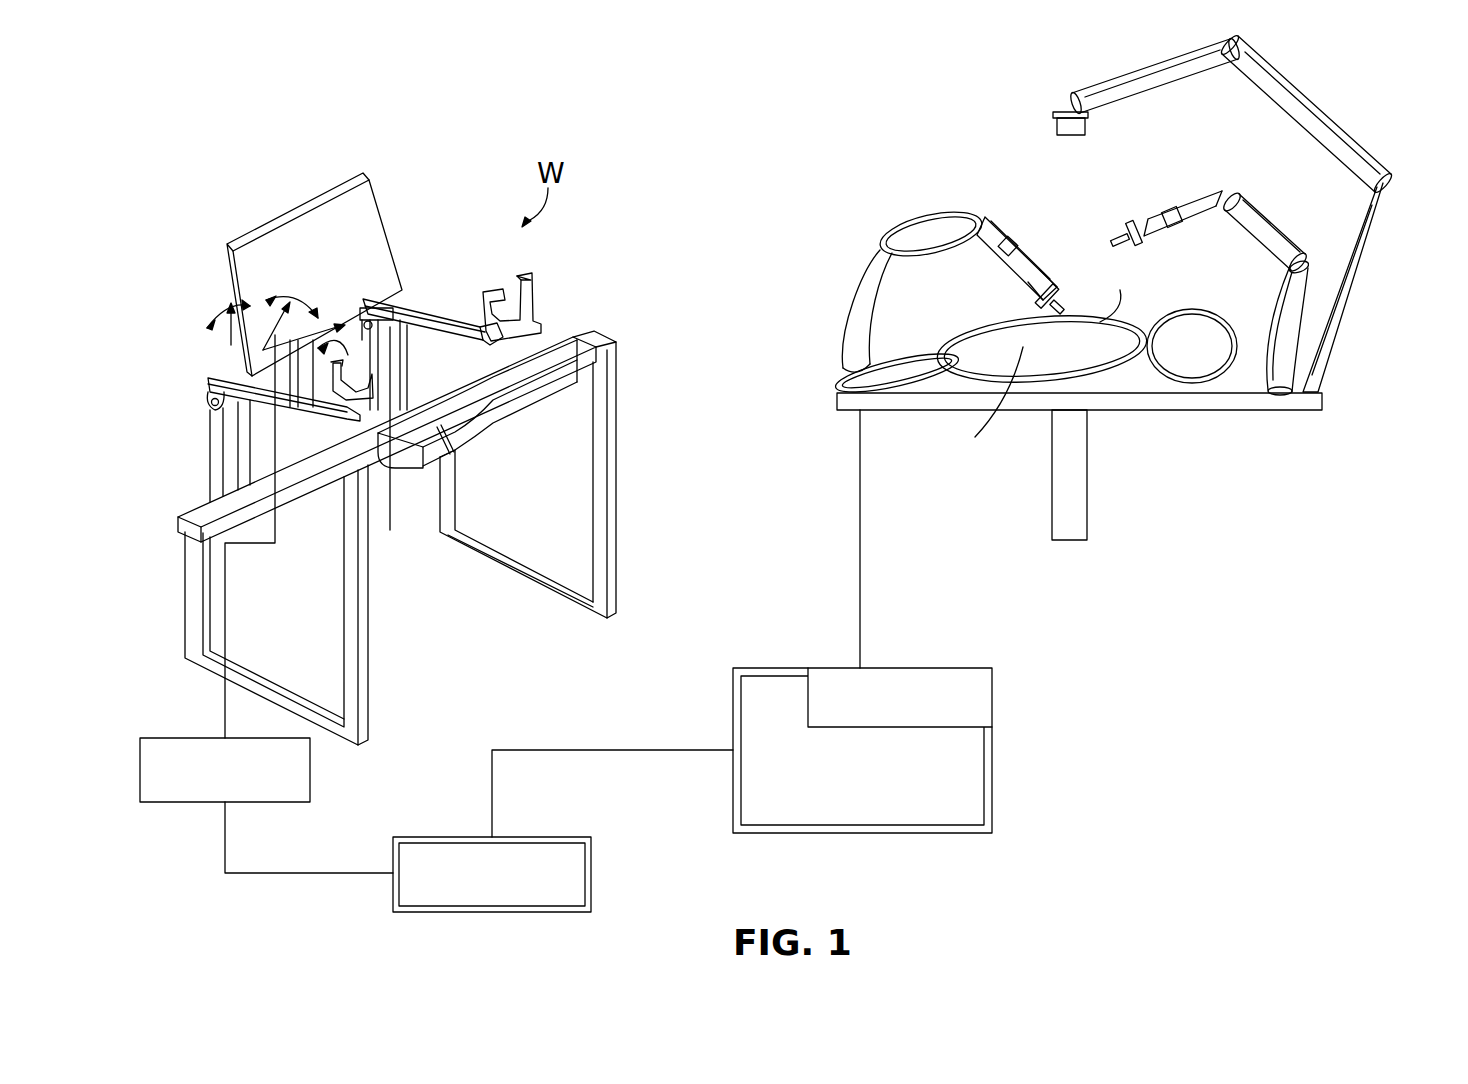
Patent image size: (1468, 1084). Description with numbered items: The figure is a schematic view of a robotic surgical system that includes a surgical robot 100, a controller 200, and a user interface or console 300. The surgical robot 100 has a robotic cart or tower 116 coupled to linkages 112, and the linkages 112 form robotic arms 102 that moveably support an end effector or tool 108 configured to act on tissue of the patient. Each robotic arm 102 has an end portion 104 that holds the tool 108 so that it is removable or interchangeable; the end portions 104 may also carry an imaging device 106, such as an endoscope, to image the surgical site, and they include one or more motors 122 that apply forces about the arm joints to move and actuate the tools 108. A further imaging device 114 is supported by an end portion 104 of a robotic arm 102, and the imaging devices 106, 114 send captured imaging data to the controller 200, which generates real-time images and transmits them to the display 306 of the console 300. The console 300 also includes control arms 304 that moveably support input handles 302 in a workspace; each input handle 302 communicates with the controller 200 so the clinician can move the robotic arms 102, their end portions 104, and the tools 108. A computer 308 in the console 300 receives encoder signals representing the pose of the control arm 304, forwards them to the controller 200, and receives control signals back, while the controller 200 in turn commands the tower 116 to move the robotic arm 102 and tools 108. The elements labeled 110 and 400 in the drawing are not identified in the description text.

The surgical robot 100 is at (923, 93).
The robotic arm 102 is at (913, 197).
The end portion 104 is at (1015, 297).
The imaging device 106 is at (1043, 283).
The end effector or tool 108 is at (1063, 300).
The robotic arm 110 is at (1180, 150).
The linkages 112 is at (1330, 125).
The imaging device 114 is at (1053, 125).
The robotic cart or tower 116 is at (862, 750).
The motors 122 is at (1007, 230).
The controller 200 is at (492, 874).
The user interface or console 300 is at (252, 115).
The input handles 302 is at (536, 293).
The control arms 304 is at (445, 317).
The display 306 is at (377, 188).
The computer 308 is at (182, 737).
The tracking marker 400 is at (1015, 278).